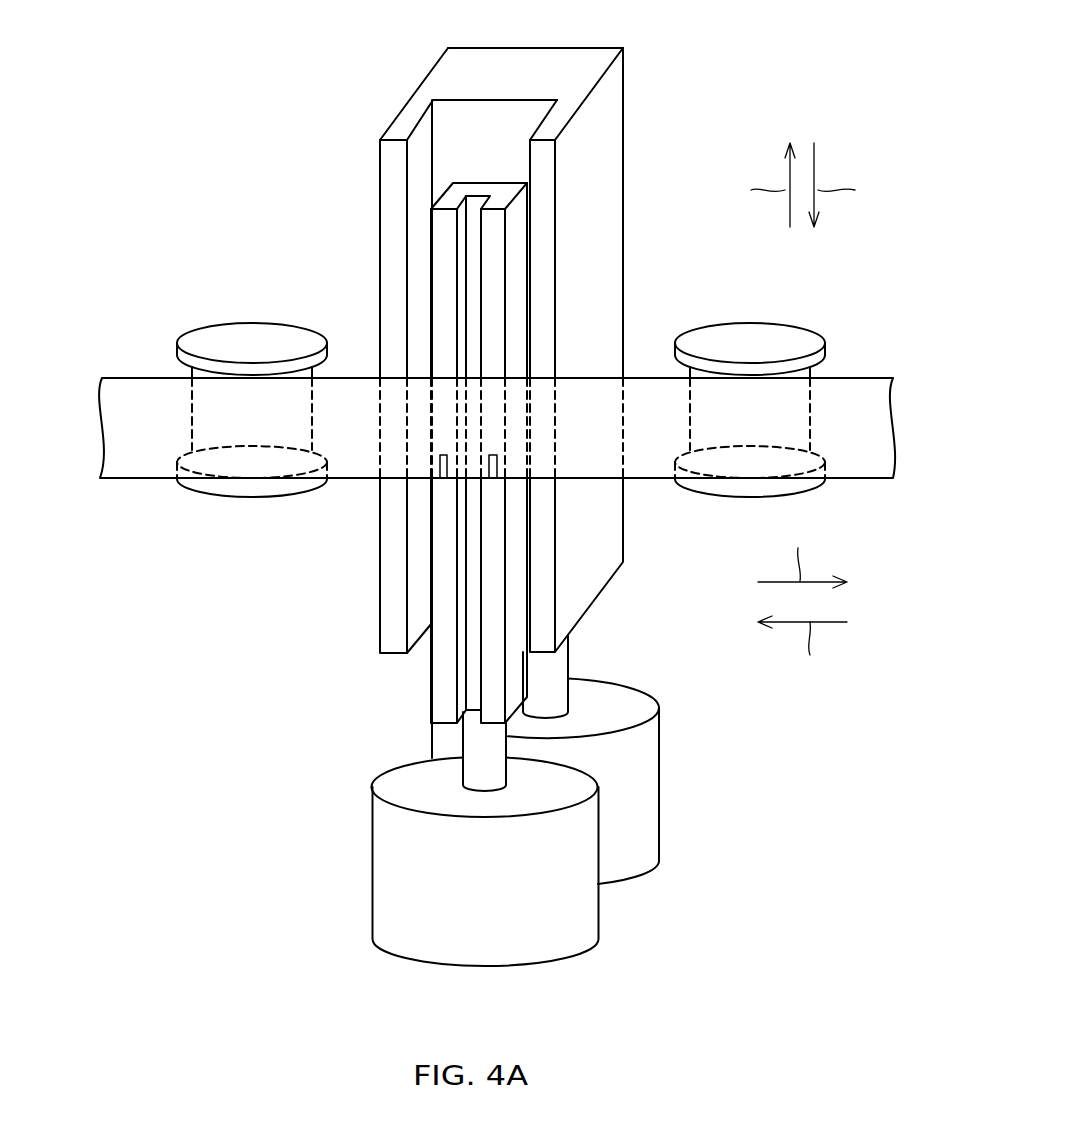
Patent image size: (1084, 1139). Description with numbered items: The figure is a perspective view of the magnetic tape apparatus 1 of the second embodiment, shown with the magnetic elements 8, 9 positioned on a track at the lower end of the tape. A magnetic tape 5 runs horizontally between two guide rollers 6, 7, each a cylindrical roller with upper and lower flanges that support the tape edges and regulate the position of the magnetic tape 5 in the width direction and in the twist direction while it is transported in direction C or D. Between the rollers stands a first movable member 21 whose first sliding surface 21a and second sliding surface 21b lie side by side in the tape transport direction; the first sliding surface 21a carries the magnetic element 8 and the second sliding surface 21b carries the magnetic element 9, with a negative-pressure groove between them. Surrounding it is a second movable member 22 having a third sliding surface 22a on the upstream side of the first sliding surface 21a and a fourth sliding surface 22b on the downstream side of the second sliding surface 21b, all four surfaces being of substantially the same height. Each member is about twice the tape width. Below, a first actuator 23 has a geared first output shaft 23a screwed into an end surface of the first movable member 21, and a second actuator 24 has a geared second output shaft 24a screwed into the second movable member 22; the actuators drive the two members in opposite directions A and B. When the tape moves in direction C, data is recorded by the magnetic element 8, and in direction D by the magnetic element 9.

The magnetic recording device 1 is at (497, 486).
The magnetic tape 5 is at (497, 405).
The guide roller 6 is at (252, 383).
The guide roller 7 is at (750, 383).
The magnetic element 8 is at (390, 491).
The magnetic element 9 is at (569, 494).
The first movable member 21 is at (484, 382).
The first sliding surface 21a is at (385, 459).
The second sliding surface 21b is at (579, 453).
The second movable member 22 is at (484, 385).
The third sliding surface 22a is at (369, 350).
The fourth sliding surface 22b is at (604, 350).
The first actuator 23 is at (520, 862).
The first output shaft 23a is at (433, 751).
The second actuator 24 is at (581, 781).
The second output shaft 24a is at (591, 676).